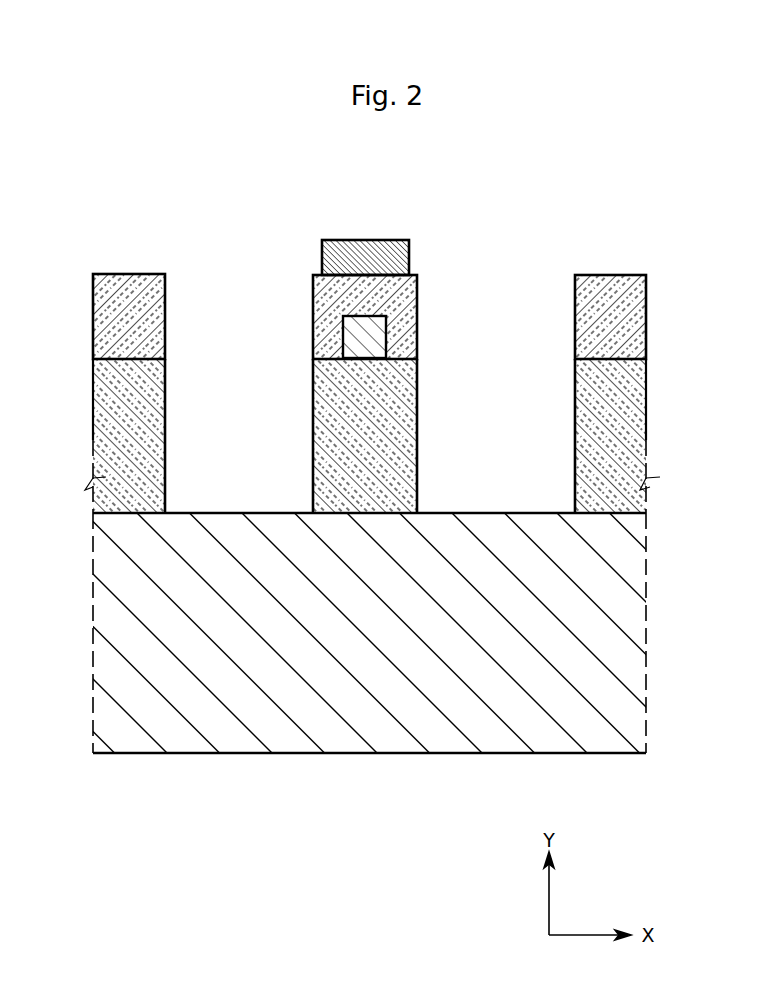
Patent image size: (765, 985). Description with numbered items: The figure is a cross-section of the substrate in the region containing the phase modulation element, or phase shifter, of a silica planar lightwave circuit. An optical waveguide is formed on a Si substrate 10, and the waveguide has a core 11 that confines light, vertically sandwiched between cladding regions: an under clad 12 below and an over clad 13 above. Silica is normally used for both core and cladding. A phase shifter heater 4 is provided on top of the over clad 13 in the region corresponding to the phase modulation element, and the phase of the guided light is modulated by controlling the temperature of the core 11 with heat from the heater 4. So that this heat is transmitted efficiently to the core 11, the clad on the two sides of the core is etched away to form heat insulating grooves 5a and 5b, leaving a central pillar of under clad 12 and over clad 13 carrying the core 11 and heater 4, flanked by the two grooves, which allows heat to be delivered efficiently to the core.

The Si substrate 10 is at (358, 754).
The under clad 12 is at (417, 478).
The over clad 13 is at (417, 312).
The phase shifter heater 4 is at (409, 252).
The core 11 is at (355, 334).
The heat insulating groove 5a is at (255, 418).
The heat insulating groove 5b is at (513, 418).